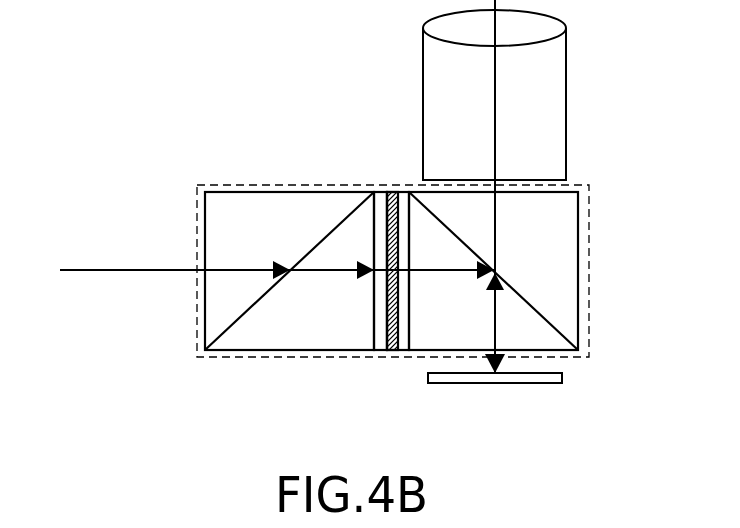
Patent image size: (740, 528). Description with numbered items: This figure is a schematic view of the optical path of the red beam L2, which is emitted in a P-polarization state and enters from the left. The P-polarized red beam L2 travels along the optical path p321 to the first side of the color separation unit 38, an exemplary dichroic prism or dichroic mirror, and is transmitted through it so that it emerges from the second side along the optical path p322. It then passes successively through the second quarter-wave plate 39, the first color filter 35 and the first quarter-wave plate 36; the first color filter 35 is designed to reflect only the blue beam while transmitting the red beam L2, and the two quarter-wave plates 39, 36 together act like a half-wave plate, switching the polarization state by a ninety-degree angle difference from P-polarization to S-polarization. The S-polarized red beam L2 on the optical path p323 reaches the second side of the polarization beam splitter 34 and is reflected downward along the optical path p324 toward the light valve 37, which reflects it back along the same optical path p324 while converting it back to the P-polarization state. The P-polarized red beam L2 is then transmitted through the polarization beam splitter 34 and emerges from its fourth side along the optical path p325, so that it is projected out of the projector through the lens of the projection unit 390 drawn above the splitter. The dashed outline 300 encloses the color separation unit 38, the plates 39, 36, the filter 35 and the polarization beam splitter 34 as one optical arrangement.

The optical module 300 is at (589, 263).
The color separation unit 38 is at (226, 328).
The polarization beam splitter 34 is at (557, 328).
The second quarter-wave plate 39 is at (378, 197).
The first quarter-wave plate 36 is at (403, 197).
The first color filter 35 is at (386, 337).
The projection unit 390 is at (438, 98).
The light valve 37 is at (520, 378).
The red beam L2 is at (114, 273).
The optical path p321 is at (225, 268).
The optical path p322 is at (323, 268).
The optical path p323 is at (405, 270).
The optical path p324 is at (490, 312).
The optical path p325 is at (497, 232).